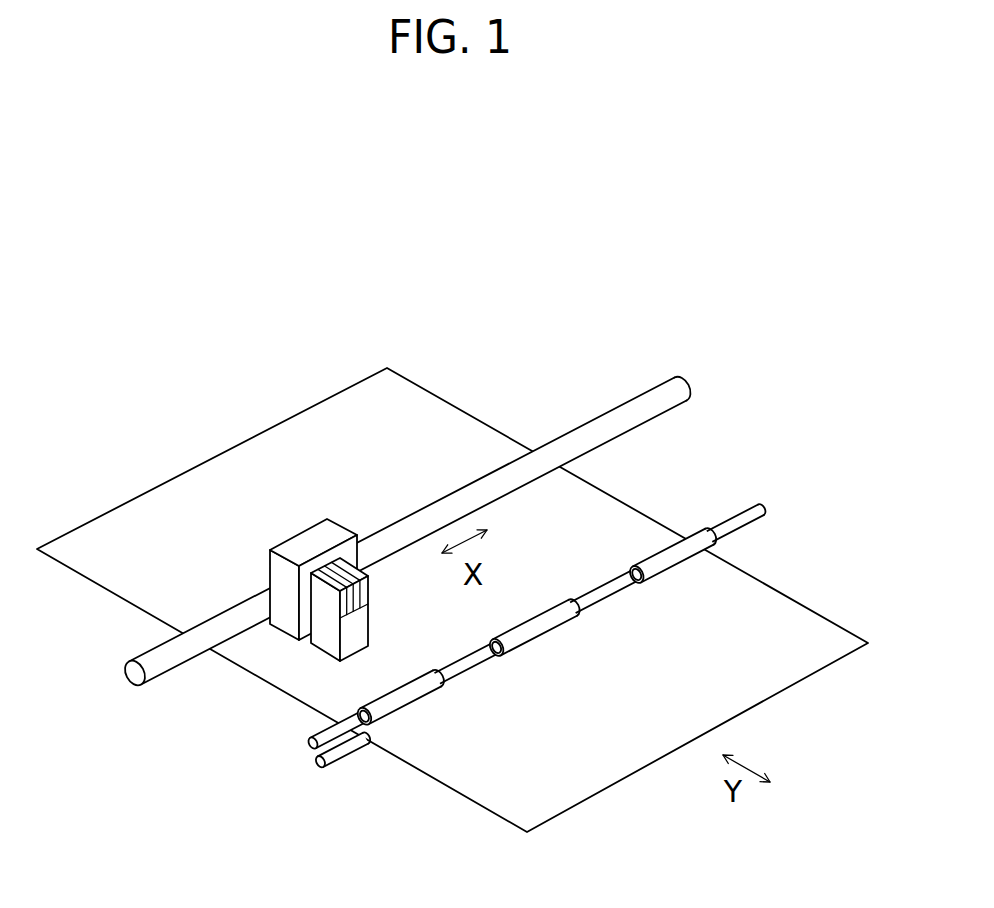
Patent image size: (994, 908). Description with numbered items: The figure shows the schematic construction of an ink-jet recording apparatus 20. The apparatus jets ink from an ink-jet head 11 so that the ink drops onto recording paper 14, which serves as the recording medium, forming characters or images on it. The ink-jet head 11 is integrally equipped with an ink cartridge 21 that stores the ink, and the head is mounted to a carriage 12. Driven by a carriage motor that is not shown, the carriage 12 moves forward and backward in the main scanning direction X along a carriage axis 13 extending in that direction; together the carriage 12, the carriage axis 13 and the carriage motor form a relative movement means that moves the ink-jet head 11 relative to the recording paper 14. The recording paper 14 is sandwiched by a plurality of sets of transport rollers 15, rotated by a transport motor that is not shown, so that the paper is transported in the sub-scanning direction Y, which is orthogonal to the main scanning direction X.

The ink-jet head 11 is at (316, 646).
The carriage 12 is at (303, 523).
The carriage axis 13 is at (637, 399).
The recording paper 14 is at (500, 815).
The transport rollers 15 is at (407, 709).
The ink-jet recording apparatus 20 is at (421, 255).
The ink cartridge 21 is at (368, 598).